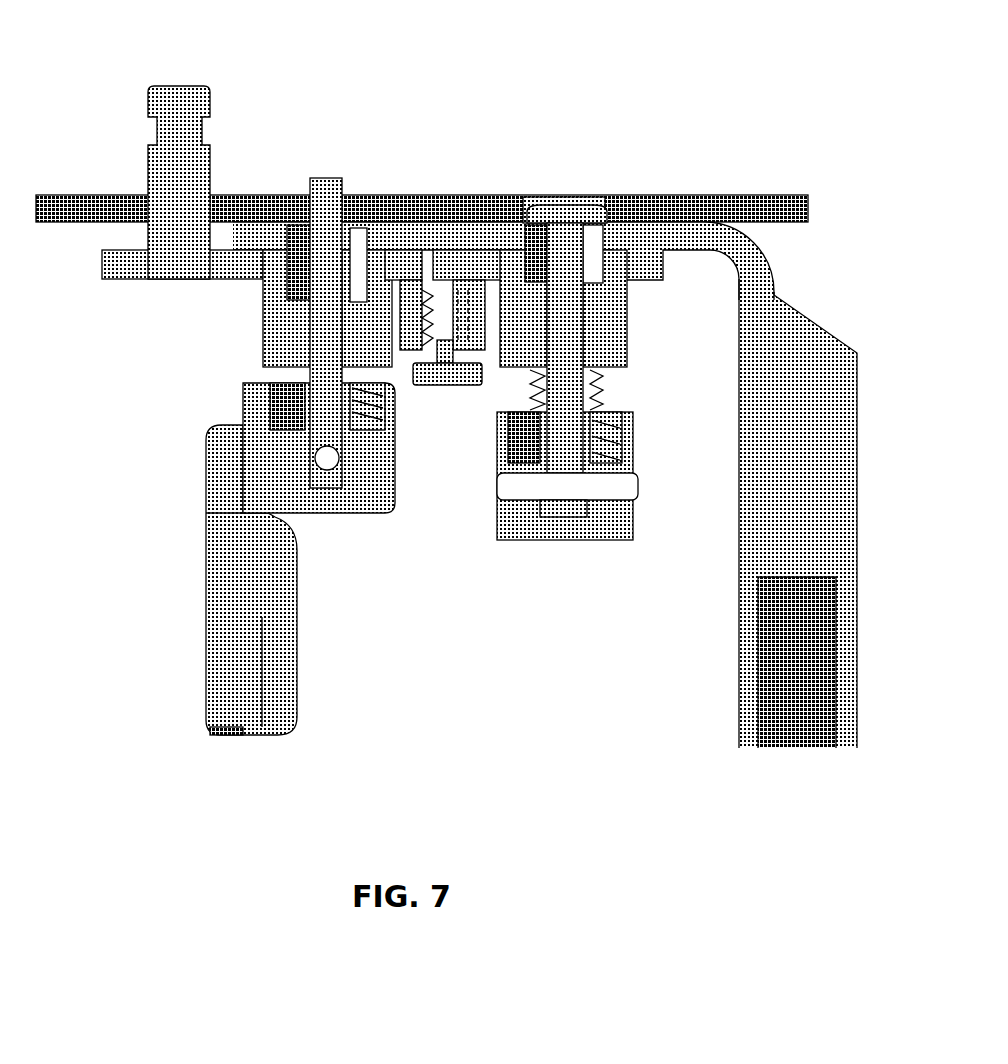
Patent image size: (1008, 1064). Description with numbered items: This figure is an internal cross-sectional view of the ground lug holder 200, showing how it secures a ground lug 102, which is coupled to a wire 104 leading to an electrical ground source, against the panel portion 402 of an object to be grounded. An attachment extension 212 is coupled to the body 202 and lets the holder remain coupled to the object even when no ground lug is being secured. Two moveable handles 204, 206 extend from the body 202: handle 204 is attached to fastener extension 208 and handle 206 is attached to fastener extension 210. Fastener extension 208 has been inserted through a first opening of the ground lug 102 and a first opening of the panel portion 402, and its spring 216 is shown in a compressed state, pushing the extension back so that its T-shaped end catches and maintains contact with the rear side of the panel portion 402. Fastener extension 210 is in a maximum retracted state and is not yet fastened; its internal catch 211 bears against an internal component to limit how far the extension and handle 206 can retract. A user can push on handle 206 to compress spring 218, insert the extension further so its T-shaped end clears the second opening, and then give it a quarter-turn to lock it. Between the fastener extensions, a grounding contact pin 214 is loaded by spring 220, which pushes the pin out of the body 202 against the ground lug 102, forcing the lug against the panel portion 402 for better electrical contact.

The ground lug 102 is at (665, 233).
The wire 104 is at (801, 579).
The ground lug holder 200 is at (84, 264).
The body 202 is at (123, 279).
The handle 204 is at (240, 727).
The handle 206 is at (508, 540).
The fastener extension 208 is at (333, 170).
The fastener extension 210 is at (562, 205).
The internal catch 211 is at (593, 293).
The attachment extension 212 is at (180, 85).
The grounding contact pin 214 is at (445, 257).
The spring 216 is at (293, 368).
The spring 218 is at (597, 398).
The spring 220 is at (465, 320).
The panel portion 402 is at (72, 197).